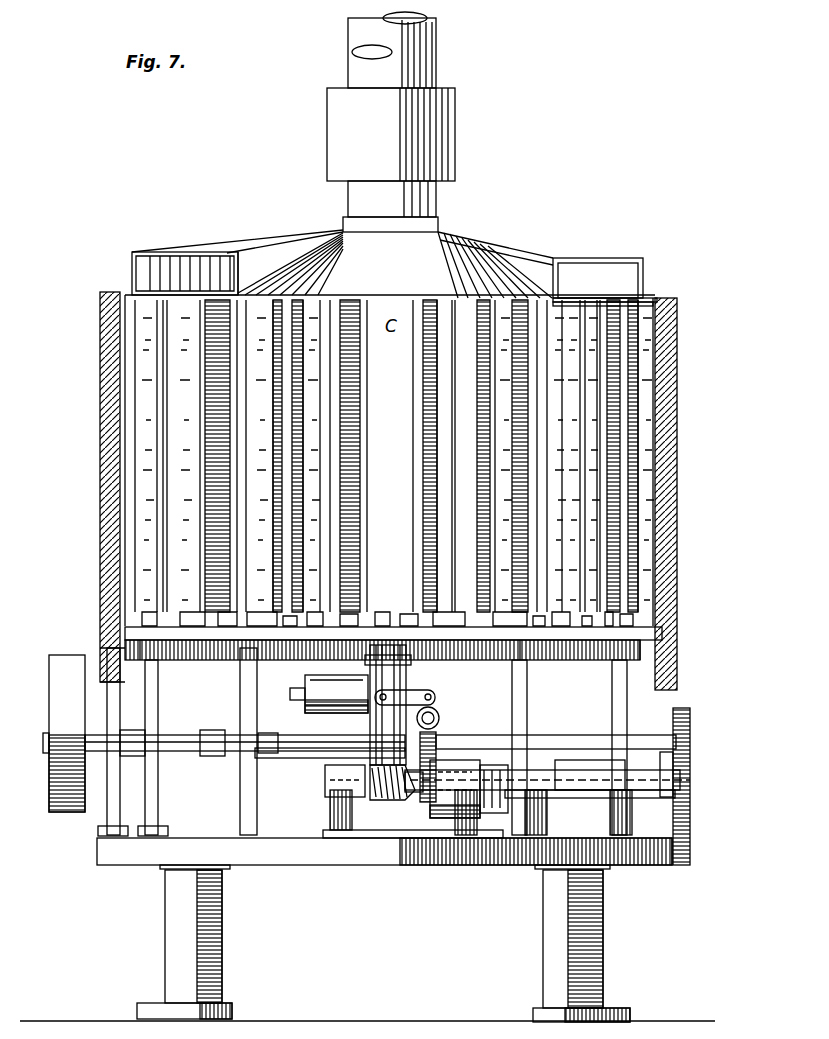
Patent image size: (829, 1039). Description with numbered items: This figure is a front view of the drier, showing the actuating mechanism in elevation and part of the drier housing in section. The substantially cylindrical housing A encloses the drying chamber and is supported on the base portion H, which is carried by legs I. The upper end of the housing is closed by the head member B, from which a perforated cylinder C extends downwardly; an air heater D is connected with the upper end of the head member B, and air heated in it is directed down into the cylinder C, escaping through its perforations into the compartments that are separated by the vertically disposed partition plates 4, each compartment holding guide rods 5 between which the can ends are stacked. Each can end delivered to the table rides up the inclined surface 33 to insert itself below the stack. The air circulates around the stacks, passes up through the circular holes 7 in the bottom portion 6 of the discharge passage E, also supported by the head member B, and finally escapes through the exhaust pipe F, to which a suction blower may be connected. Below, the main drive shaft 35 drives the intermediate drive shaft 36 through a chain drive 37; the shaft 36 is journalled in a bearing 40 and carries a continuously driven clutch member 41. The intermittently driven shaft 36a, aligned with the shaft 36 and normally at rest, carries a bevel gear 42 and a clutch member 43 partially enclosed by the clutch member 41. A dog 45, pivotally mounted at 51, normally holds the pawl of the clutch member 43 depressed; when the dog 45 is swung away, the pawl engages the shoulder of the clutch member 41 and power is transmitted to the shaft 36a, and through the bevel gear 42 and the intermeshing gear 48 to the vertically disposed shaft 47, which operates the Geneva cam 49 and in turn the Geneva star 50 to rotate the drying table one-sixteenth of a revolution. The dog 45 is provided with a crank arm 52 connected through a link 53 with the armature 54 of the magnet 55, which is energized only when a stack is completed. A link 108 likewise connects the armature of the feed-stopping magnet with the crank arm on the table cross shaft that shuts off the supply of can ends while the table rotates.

The exhaust pipe F is at (437, 40).
The air heater D is at (456, 130).
The head member B is at (345, 243).
The discharge passage E is at (600, 266).
The circular holes 7 is at (612, 296).
The bottom portion 6 is at (618, 304).
The housing A is at (690, 392).
The guide rods 5 is at (205, 358).
The partition plates 4 is at (185, 436).
The perforated cylinder C is at (662, 636).
The inclined surface 33 is at (118, 630).
The Geneva star 50 is at (550, 670).
The main drive shaft 35 is at (240, 748).
The Geneva cam 49 is at (384, 645).
The armature 54 is at (305, 690).
The magnet 55 is at (318, 712).
The link 53 is at (425, 685).
The crank arm 52 is at (434, 712).
The pivot 51 is at (440, 716).
The dog 45 is at (440, 742).
The link 108 is at (350, 750).
The vertically disposed shaft 47 is at (375, 772).
The intermeshing gear 48 is at (380, 785).
The intermittently driven shaft 36a is at (372, 798).
The intermediate drive shaft 36 is at (692, 794).
The chain drive 37 is at (690, 772).
The bevel gear 42 is at (400, 808).
The clutch member 43 is at (432, 818).
The continuously driven clutch member 41 is at (470, 830).
The bearing 40 is at (570, 795).
The base portion H is at (645, 875).
The legs I is at (222, 955).